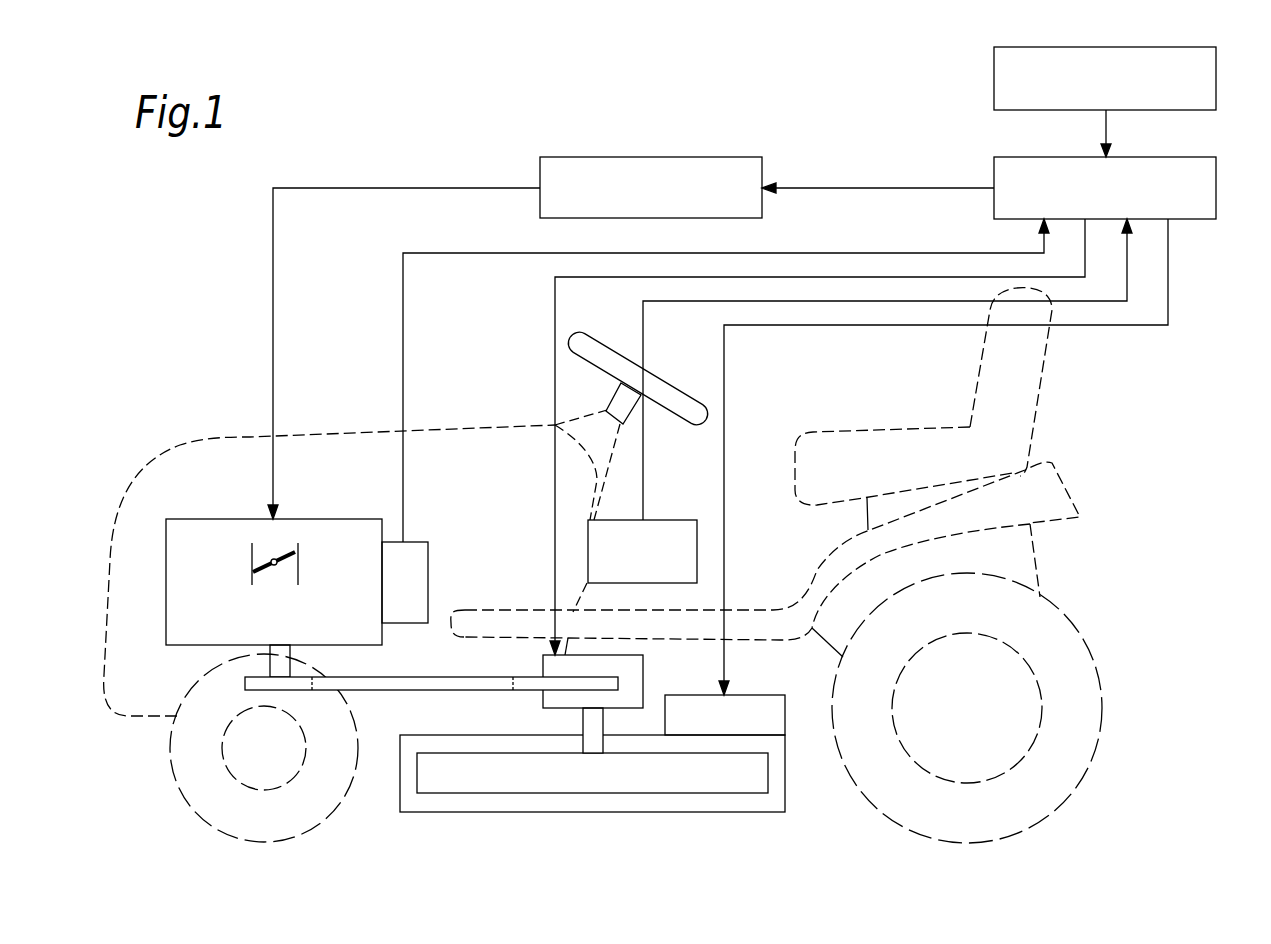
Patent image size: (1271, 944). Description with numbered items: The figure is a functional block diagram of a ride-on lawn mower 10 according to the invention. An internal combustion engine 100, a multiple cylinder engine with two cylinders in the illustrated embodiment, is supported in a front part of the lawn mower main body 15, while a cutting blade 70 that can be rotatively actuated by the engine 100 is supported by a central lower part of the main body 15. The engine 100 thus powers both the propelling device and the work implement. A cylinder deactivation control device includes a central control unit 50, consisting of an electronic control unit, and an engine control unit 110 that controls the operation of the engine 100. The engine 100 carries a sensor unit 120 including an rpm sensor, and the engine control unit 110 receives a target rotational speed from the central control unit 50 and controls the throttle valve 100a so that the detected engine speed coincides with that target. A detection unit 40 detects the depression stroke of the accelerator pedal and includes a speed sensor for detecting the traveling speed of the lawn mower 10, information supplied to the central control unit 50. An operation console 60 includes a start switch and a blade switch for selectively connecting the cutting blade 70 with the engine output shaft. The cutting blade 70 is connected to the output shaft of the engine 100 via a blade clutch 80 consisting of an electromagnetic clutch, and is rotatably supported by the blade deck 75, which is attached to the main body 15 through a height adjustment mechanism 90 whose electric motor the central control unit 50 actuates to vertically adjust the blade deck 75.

The ride-on lawn mower 10 is at (890, 113).
The lawn mower main body 15 is at (235, 424).
The detection unit 40 is at (1015, 110).
The central control unit 50 is at (1158, 157).
The operation console 60 is at (682, 520).
The cutting blade 70 is at (718, 795).
The blade deck 75 is at (545, 812).
The blade clutch 80 is at (555, 708).
The height adjustment mechanism 90 is at (692, 695).
The internal combustion engine 100 is at (322, 519).
The throttle valve 100a is at (247, 557).
The engine control unit 110 is at (702, 157).
The sensor unit 120 is at (428, 557).